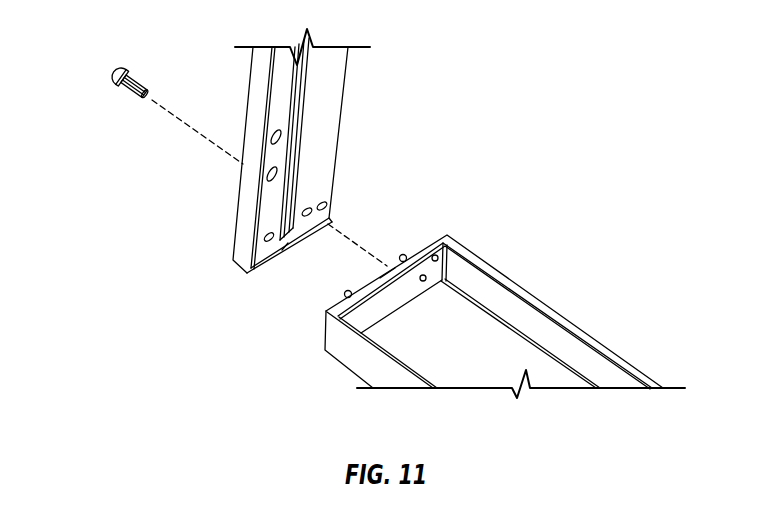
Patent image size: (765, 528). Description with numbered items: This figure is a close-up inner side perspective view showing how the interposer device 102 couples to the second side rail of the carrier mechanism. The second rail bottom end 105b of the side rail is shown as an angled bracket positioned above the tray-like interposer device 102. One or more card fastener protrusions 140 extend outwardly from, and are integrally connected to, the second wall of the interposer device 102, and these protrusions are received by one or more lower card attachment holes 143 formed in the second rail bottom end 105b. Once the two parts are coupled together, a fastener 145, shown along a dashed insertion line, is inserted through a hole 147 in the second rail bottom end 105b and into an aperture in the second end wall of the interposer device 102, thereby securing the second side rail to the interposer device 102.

The interposer device 102 is at (524, 251).
The second rail bottom end 105b is at (236, 285).
The card fastener protrusions 140 is at (388, 250).
The lower card attachment holes 143 is at (290, 244).
The fastener 145 is at (123, 70).
The hole 147 is at (331, 213).